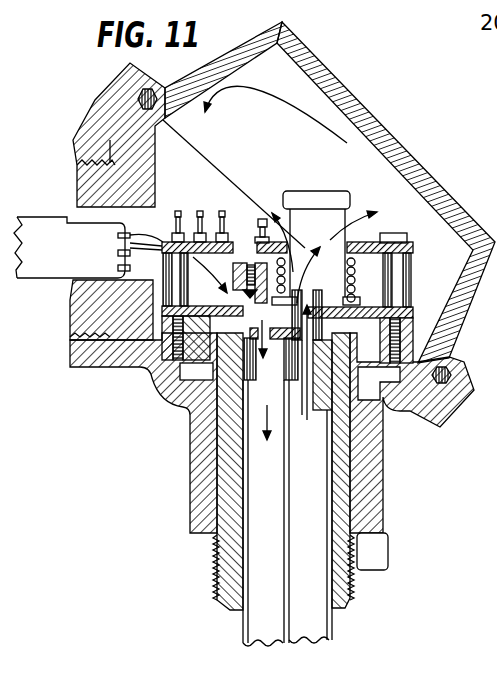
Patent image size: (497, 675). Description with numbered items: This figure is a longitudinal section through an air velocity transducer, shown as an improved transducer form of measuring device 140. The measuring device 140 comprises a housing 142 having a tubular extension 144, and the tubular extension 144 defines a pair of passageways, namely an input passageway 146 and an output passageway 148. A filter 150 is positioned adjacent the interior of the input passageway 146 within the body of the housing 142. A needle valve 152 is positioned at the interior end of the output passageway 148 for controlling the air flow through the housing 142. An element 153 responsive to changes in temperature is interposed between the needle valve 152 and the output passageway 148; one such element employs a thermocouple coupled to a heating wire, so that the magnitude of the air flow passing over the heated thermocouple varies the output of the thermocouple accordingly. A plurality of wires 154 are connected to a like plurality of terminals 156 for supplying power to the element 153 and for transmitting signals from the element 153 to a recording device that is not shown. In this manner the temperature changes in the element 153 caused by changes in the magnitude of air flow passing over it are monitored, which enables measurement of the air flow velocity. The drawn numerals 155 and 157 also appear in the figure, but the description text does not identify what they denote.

The measuring device 140 is at (413, 90).
The housing 142 is at (403, 152).
The tubular extension 144 is at (315, 640).
The input passageway 146 is at (300, 488).
The output passageway 148 is at (265, 483).
The filter 150 is at (343, 173).
The needle valve 152 is at (247, 263).
The element responsive to changes in temperature 153 is at (145, 388).
The wires 154 is at (221, 211).
The cable 155 is at (45, 240).
The terminals 156 is at (120, 246).
The mounting plate 157 is at (415, 307).